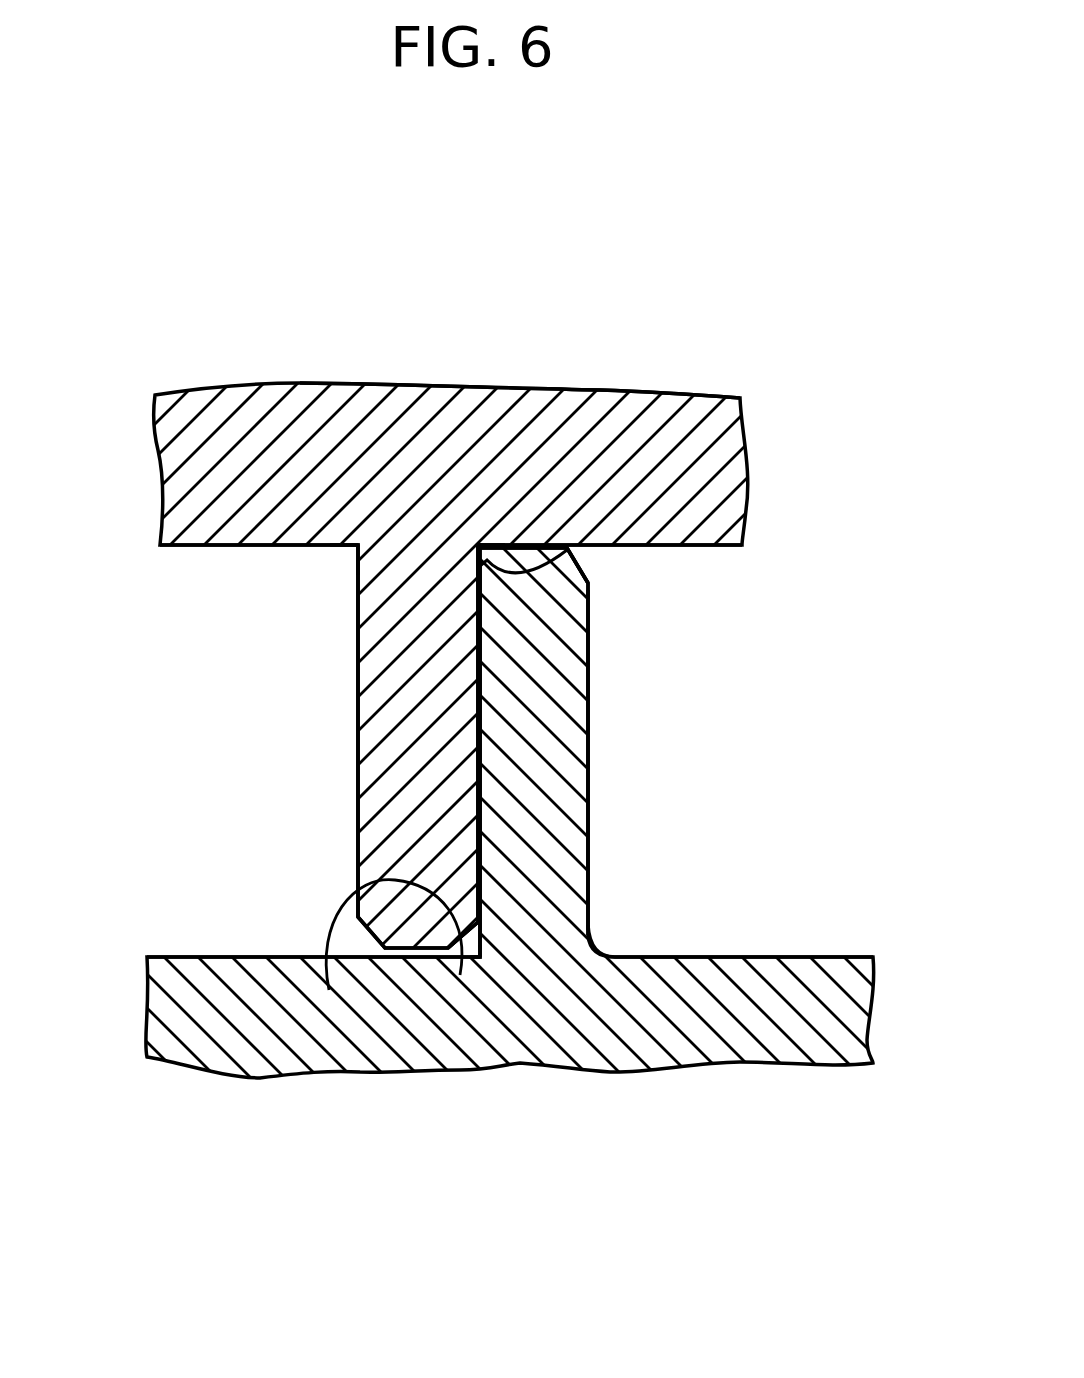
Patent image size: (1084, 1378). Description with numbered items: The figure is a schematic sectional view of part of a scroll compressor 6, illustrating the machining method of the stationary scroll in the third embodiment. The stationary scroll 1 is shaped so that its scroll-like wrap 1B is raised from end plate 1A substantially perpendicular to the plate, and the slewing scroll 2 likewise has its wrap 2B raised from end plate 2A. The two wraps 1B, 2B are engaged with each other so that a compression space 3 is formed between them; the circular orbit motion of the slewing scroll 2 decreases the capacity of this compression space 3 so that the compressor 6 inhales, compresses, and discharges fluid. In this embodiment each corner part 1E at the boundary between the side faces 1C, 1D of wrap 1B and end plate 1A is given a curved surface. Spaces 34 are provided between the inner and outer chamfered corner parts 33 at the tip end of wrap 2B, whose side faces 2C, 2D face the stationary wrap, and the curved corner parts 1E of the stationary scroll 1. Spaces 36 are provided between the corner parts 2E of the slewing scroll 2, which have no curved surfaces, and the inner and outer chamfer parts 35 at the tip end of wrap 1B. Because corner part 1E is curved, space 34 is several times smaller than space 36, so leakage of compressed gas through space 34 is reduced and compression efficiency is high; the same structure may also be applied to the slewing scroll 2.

The stationary scroll 1 is at (397, 1082).
The end plate 1A is at (650, 1047).
The wrap 1B is at (560, 730).
The side face 1C is at (588, 660).
The side face 1D is at (473, 710).
The corner part 1E is at (395, 882).
The slewing scroll 2 is at (577, 330).
The end plate 2A is at (587, 417).
The wrap 2B is at (387, 652).
The side face 2C is at (480, 762).
The side face 2D is at (358, 793).
The corner part 2E is at (478, 543).
The compression space 3 is at (292, 572).
The scroll compressor 6 is at (163, 1082).
The chamfered corner part 33 is at (329, 990).
The space 34 is at (470, 942).
The chamfer part 35 is at (485, 558).
The space 36 is at (567, 548).